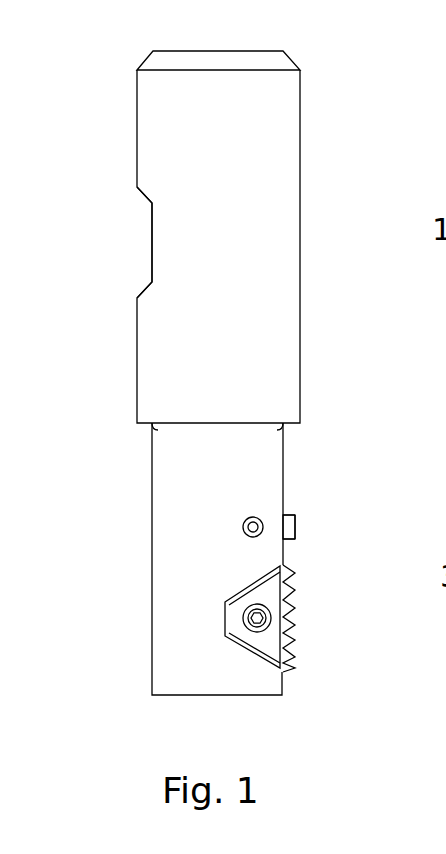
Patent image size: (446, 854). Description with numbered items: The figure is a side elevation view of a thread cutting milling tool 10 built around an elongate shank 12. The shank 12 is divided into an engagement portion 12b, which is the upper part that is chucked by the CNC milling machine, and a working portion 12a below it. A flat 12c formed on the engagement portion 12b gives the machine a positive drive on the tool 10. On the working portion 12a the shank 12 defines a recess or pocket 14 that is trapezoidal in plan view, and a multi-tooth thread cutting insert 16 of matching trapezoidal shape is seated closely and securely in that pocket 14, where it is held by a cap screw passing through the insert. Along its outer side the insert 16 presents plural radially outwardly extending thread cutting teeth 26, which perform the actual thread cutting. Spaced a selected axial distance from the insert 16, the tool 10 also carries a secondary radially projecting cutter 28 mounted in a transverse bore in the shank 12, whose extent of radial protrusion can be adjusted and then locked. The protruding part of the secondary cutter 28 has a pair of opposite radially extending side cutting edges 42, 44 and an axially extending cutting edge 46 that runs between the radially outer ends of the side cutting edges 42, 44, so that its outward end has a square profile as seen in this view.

The thread cutting milling tool 10 is at (232, 373).
The elongate shank 12 is at (222, 373).
The working portion 12a is at (284, 465).
The engagement portion 12b is at (300, 155).
The flat 12c is at (152, 248).
The pocket 14 is at (292, 611).
The thread cutting insert 16 is at (270, 643).
The thread cutting teeth 26 is at (300, 637).
The secondary cutter 28 is at (296, 528).
The side cutting edge 42 is at (288, 547).
The side cutting edge 44 is at (290, 512).
The axially extending cutting edge 46 is at (295, 540).